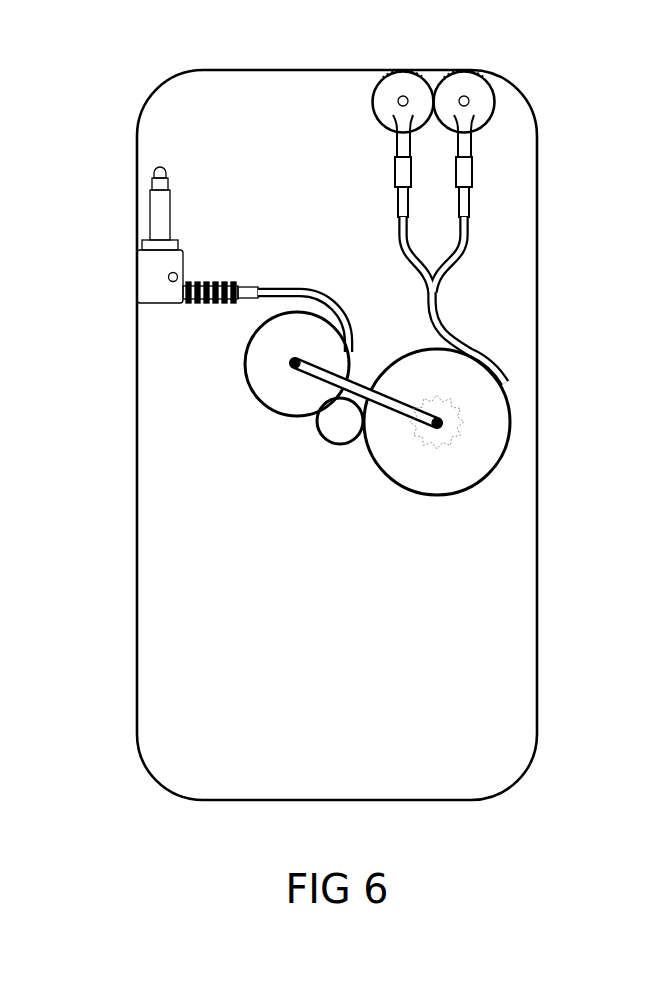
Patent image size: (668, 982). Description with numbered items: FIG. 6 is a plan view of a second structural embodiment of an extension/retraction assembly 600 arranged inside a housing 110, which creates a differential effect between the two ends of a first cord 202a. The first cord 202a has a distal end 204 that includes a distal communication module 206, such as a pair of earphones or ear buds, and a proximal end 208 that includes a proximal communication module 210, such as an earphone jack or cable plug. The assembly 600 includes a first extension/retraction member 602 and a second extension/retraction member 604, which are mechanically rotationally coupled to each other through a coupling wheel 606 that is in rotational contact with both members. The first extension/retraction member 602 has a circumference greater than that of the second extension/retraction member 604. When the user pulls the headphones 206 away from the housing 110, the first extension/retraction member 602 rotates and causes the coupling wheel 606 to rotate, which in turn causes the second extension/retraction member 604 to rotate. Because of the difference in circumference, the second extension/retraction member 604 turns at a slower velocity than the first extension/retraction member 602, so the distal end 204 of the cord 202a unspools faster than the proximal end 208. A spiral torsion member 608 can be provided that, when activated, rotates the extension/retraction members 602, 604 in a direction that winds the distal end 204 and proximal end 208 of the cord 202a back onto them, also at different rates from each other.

The housing 110 is at (320, 686).
The extension/retraction assembly 600 is at (343, 255).
The first cord 202a is at (360, 377).
The distal end 204 is at (452, 298).
The distal communication module 206 is at (468, 87).
The proximal end 208 is at (242, 317).
The proximal communication module 210 is at (153, 282).
The first extension/retraction member 602 is at (468, 463).
The second extension/retraction member 604 is at (273, 383).
The coupling wheel 606 is at (342, 427).
The spiral torsion member 608 is at (453, 423).